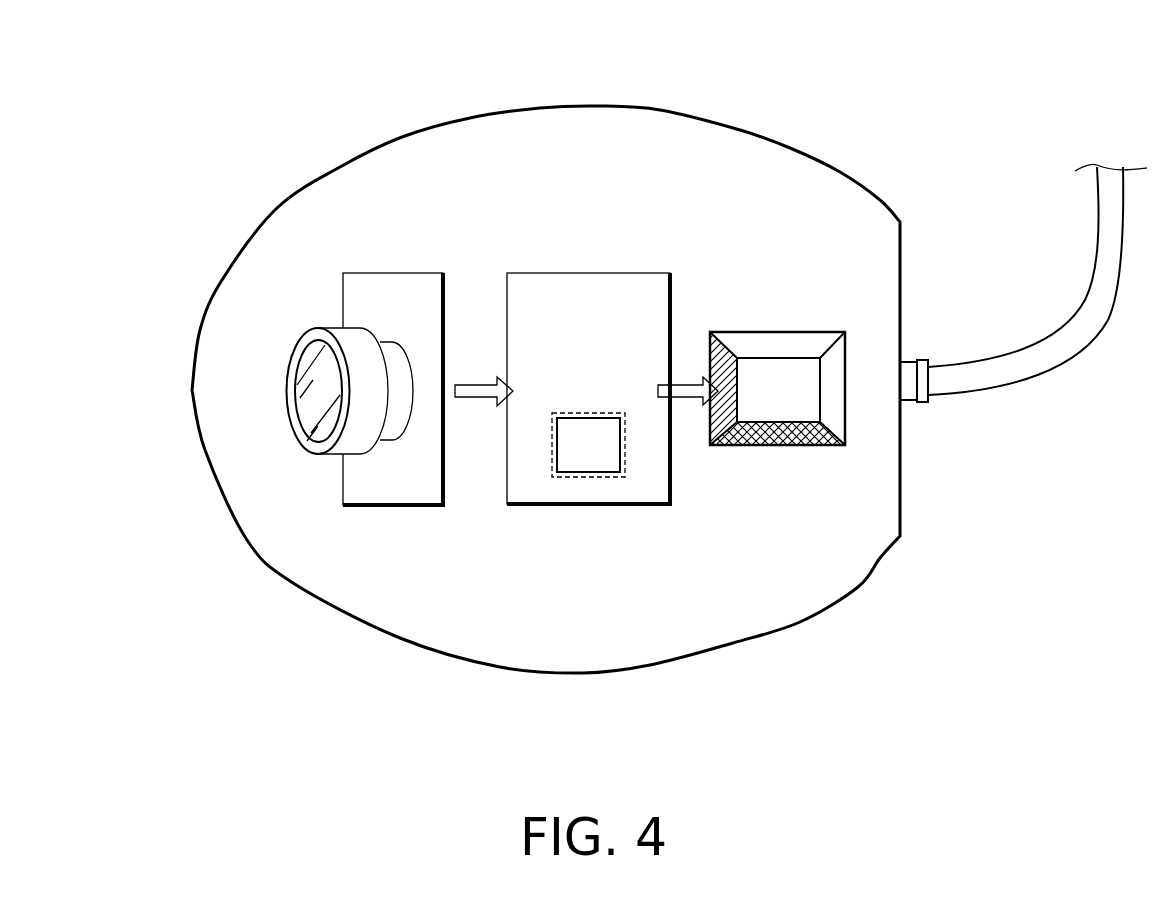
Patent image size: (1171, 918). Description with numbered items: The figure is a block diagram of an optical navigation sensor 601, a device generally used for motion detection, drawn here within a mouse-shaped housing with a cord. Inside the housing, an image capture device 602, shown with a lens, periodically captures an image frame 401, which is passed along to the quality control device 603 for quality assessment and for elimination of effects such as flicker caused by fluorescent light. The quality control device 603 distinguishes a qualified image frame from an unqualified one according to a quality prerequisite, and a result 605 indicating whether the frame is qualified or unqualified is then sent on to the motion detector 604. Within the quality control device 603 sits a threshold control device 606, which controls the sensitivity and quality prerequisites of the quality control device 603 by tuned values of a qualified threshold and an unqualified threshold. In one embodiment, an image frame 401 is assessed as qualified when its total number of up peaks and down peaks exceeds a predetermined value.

The optical navigation sensor 601 is at (277, 208).
The image capture device 602 is at (392, 273).
The quality control device 603 is at (587, 273).
The motion detector 604 is at (777, 332).
The result 605 is at (690, 392).
The threshold control device 606 is at (587, 450).
The image frame 401 is at (478, 397).